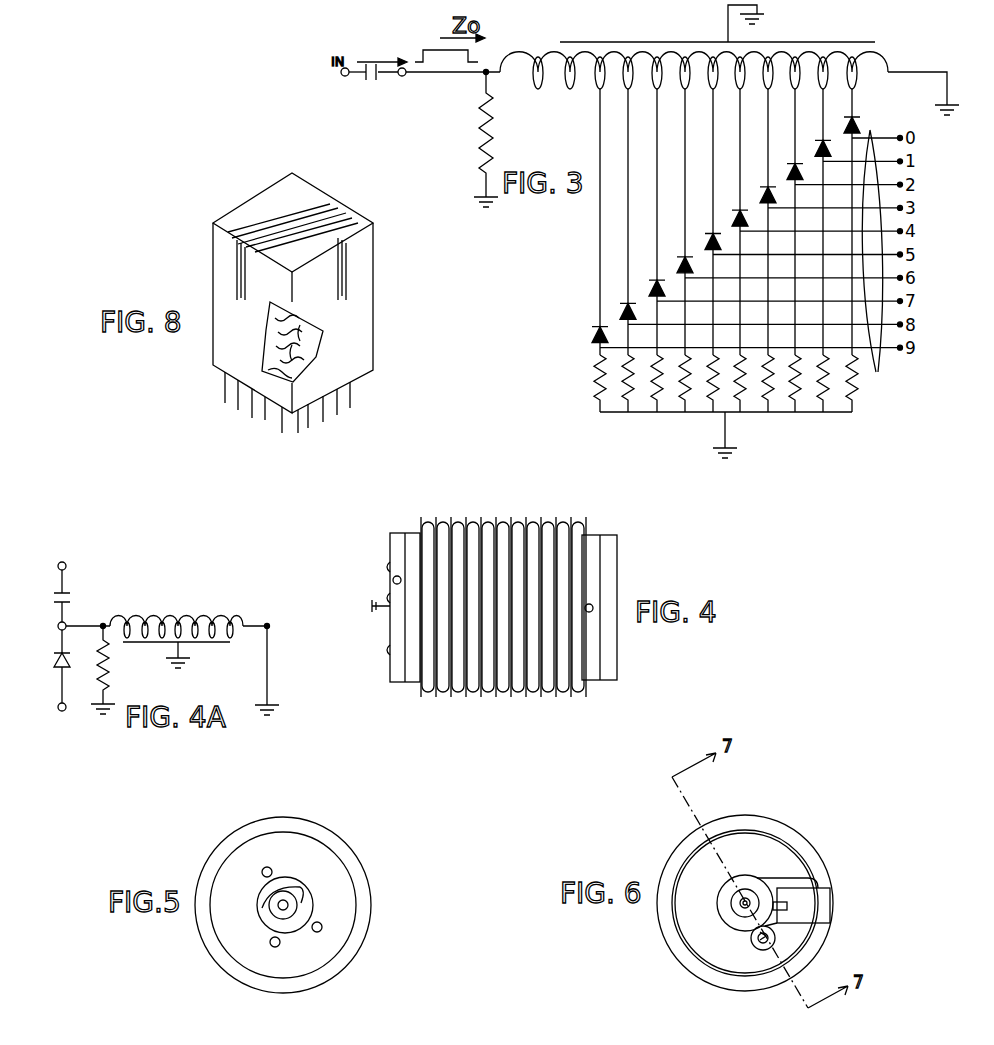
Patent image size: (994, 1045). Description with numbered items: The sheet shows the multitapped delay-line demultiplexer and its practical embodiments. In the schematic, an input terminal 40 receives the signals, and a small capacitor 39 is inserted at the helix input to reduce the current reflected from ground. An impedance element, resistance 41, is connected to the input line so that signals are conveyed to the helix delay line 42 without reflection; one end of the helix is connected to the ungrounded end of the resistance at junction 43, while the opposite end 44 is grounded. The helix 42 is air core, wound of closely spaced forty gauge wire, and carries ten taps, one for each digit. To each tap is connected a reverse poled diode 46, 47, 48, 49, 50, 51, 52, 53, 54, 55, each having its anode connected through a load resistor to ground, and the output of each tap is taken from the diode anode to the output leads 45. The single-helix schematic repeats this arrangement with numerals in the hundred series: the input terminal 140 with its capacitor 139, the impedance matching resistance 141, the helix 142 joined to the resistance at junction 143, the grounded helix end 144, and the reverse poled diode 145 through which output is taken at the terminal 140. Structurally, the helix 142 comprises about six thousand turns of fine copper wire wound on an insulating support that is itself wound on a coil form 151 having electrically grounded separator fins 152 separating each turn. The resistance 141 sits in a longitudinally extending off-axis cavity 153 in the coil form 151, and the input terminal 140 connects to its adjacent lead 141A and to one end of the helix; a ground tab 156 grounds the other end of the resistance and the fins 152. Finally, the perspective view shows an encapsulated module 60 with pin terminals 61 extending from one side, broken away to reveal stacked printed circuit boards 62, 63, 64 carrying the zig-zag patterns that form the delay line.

In FIG. 3, the small capacitor 39 is at (346, 77).
In FIG. 3, the input terminal 40 is at (403, 78).
In FIG. 3, the resistance 41 is at (478, 145).
In FIG. 3, the helix delay line 42 is at (621, 55).
In FIG. 3, the junction 43 is at (488, 68).
In FIG. 3, the grounded end of helix 44 is at (893, 70).
In FIG. 3, the output leads 45 is at (880, 259).
In FIG. 3, the reverse poled diode 46 is at (852, 92).
In FIG. 3, the reverse poled diode 47 is at (823, 92).
In FIG. 3, the reverse poled diode 48 is at (795, 92).
In FIG. 3, the reverse poled diode 49 is at (768, 92).
In FIG. 3, the reverse poled diode 50 is at (740, 92).
In FIG. 3, the reverse poled diode 51 is at (713, 92).
In FIG. 3, the reverse poled diode 52 is at (685, 92).
In FIG. 3, the reverse poled diode 53 is at (657, 92).
In FIG. 3, the reverse poled diode 54 is at (628, 92).
In FIG. 3, the reverse poled diode 55 is at (600, 92).
In FIG. 8, the module 60 is at (373, 277).
In FIG. 8, the pin terminals 61 is at (340, 402).
In FIG. 8, the printed circuit board 62 is at (265, 343).
In FIG. 8, the printed circuit board 63 is at (270, 318).
In FIG. 8, the printed circuit board 64 is at (262, 387).
In FIG. 4A, the capacitor 139 is at (60, 562).
In FIG. 4A, the input terminal 140 is at (85, 624).
In FIG. 5, the input terminal 140 is at (282, 908).
In FIG. 4A, the resistance 141 is at (112, 668).
In FIG. 6, the resistance 141 is at (757, 945).
In FIG. 5, the lead of the resistance 141A is at (303, 888).
In FIG. 4A, the helix 142 is at (152, 613).
In FIG. 4, the helix 142 is at (505, 520).
In FIG. 4A, the junction 143 is at (103, 622).
In FIG. 4A, the grounded end of helix 144 is at (265, 623).
In FIG. 4A, the reverse poled diode 145 is at (53, 655).
In FIG. 4, the coil form 151 is at (412, 533).
In FIG. 5, the coil form 151 is at (250, 855).
In FIG. 6, the coil form 151 is at (778, 845).
In FIG. 5, the separator fins 152 is at (293, 823).
In FIG. 6, the separator fins 152 is at (672, 858).
In FIG. 6, the off-axis cavity 153 is at (765, 950).
In FIG. 6, the ground tab 156 is at (823, 908).